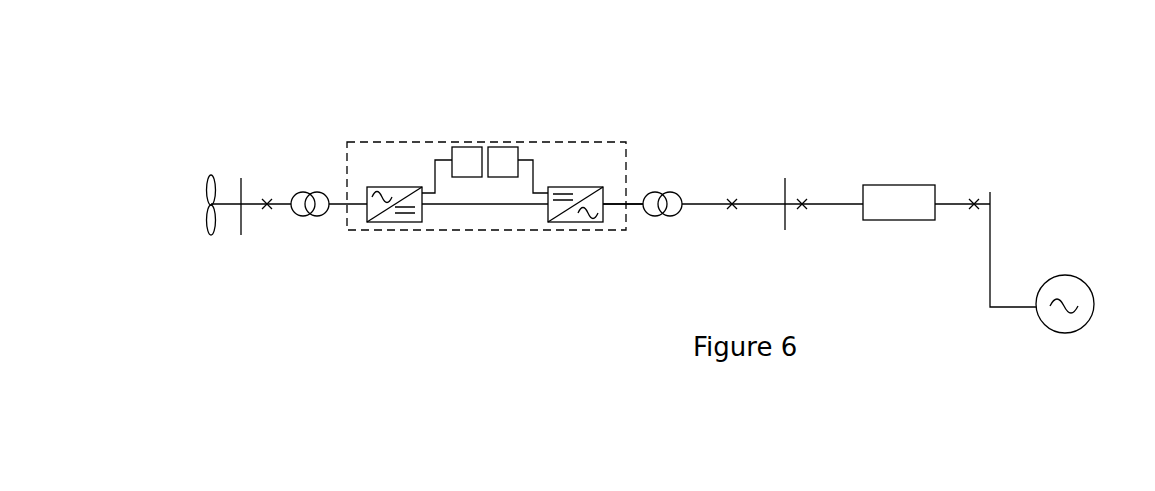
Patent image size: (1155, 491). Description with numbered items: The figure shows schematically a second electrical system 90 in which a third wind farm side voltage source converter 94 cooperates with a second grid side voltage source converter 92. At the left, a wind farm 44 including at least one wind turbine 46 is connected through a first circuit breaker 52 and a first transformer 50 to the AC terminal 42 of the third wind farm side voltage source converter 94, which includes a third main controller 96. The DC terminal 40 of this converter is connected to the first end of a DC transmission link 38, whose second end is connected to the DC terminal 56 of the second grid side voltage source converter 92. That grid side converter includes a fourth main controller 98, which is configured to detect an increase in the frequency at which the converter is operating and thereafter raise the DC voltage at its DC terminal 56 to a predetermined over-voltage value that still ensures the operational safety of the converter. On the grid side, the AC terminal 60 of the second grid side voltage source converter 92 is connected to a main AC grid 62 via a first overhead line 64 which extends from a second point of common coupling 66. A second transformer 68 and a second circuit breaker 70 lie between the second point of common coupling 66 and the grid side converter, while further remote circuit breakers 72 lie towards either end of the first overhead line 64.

The DC transmission link 38 is at (465, 206).
The DC terminal 40 is at (430, 212).
The AC terminal 42 is at (355, 139).
The wind farm 44 is at (183, 184).
The wind turbine 46 is at (203, 216).
The first transformer 50 is at (305, 215).
The first circuit breaker 52 is at (266, 212).
The DC terminal 56 is at (557, 254).
The AC terminal 60 is at (605, 203).
The main AC grid 62 is at (1072, 287).
The first overhead line 64 is at (903, 203).
The second point of common coupling 66 is at (787, 178).
The second transformer 68 is at (660, 213).
The second circuit breaker 70 is at (732, 197).
The remote circuit breakers 72 is at (802, 210).
The second electrical system 90 is at (615, 140).
The second grid side voltage source converter 92 is at (575, 224).
The third wind farm side voltage source converter 94 is at (383, 187).
The third main controller 96 is at (467, 150).
The fourth main controller 98 is at (502, 150).